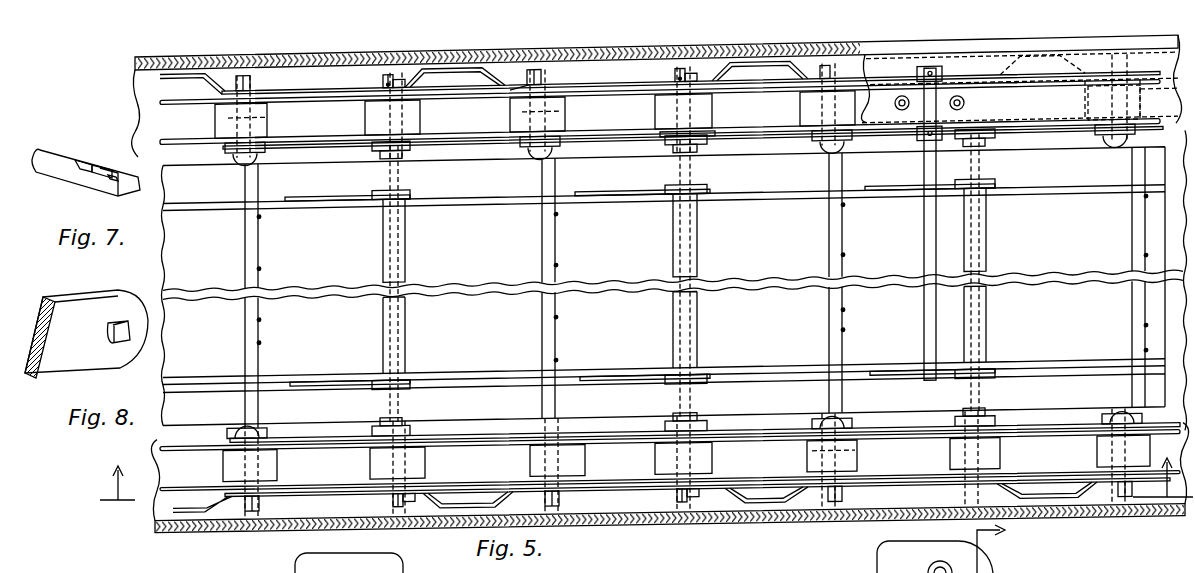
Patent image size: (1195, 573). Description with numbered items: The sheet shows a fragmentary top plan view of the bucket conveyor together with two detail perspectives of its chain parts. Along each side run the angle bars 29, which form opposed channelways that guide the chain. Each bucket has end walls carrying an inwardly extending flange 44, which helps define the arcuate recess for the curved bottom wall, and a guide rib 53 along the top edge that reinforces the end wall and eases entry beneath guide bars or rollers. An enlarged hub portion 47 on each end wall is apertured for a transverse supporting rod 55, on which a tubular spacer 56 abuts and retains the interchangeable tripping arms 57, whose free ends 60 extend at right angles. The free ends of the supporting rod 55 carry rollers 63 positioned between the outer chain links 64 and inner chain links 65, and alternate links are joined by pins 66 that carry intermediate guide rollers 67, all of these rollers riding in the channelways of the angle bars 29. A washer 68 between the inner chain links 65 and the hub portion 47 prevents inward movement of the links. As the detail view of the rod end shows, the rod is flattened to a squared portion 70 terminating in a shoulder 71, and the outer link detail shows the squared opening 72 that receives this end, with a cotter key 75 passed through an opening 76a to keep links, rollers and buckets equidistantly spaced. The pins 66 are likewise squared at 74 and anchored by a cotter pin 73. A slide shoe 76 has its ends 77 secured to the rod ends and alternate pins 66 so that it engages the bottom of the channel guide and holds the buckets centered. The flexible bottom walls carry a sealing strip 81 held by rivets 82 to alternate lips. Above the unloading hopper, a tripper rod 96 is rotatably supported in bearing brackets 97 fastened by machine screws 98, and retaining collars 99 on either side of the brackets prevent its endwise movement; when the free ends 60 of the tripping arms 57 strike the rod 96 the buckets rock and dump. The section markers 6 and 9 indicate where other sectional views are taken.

In FIG. 5, the angle bars 29 is at (333, 57).
In FIG. 5, the flange 44 is at (466, 212).
In FIG. 5, the hub portion 47 is at (410, 156).
In FIG. 5, the guide rib 53 is at (674, 289).
In FIG. 5, the supporting rod 55 is at (383, 182).
In FIG. 7, the supporting rod 55 is at (45, 155).
In FIG. 5, the tubular spacer 56 is at (405, 274).
In FIG. 5, the tripping arms 57 is at (328, 206).
In FIG. 5, the free ends of tripping arms 60 is at (338, 553).
In FIG. 5, the rollers 63 is at (420, 118).
In FIG. 5, the outer chain links 64 is at (325, 93).
In FIG. 8, the outer chain links 64 is at (74, 298).
In FIG. 5, the inner chain links 65 is at (325, 145).
In FIG. 5, the connecting pins 66 is at (268, 118).
In FIG. 5, the intermediate guide rollers 67 is at (268, 130).
In FIG. 5, the washer 68 is at (710, 155).
In FIG. 5, the flattened squared portion 70 is at (388, 80).
In FIG. 7, the flattened squared portion 70 is at (103, 170).
In FIG. 7, the shoulder 71 is at (90, 163).
In FIG. 8, the squared openings 72 is at (120, 322).
In FIG. 5, the cotter pin 73 is at (236, 85).
In FIG. 5, the squared portion of pin 74 is at (250, 85).
In FIG. 5, the cotter key 75 is at (383, 88).
In FIG. 5, the slide shoe 76 is at (450, 75).
In FIG. 7, the opening 76a is at (114, 177).
In FIG. 5, the slide shoe ends 77 is at (400, 85).
In FIG. 5, the sealing strip 81 is at (258, 247).
In FIG. 5, the rivets 82 is at (260, 271).
In FIG. 5, the tripper rod 96 is at (924, 268).
In FIG. 5, the bearing brackets 97 is at (917, 93).
In FIG. 5, the machine screws 98 is at (895, 119).
In FIG. 5, the retaining collars 99 is at (935, 83).
In FIG. 5, the section line 6 is at (646, 468).
In FIG. 5, the section line 9 is at (1002, 547).